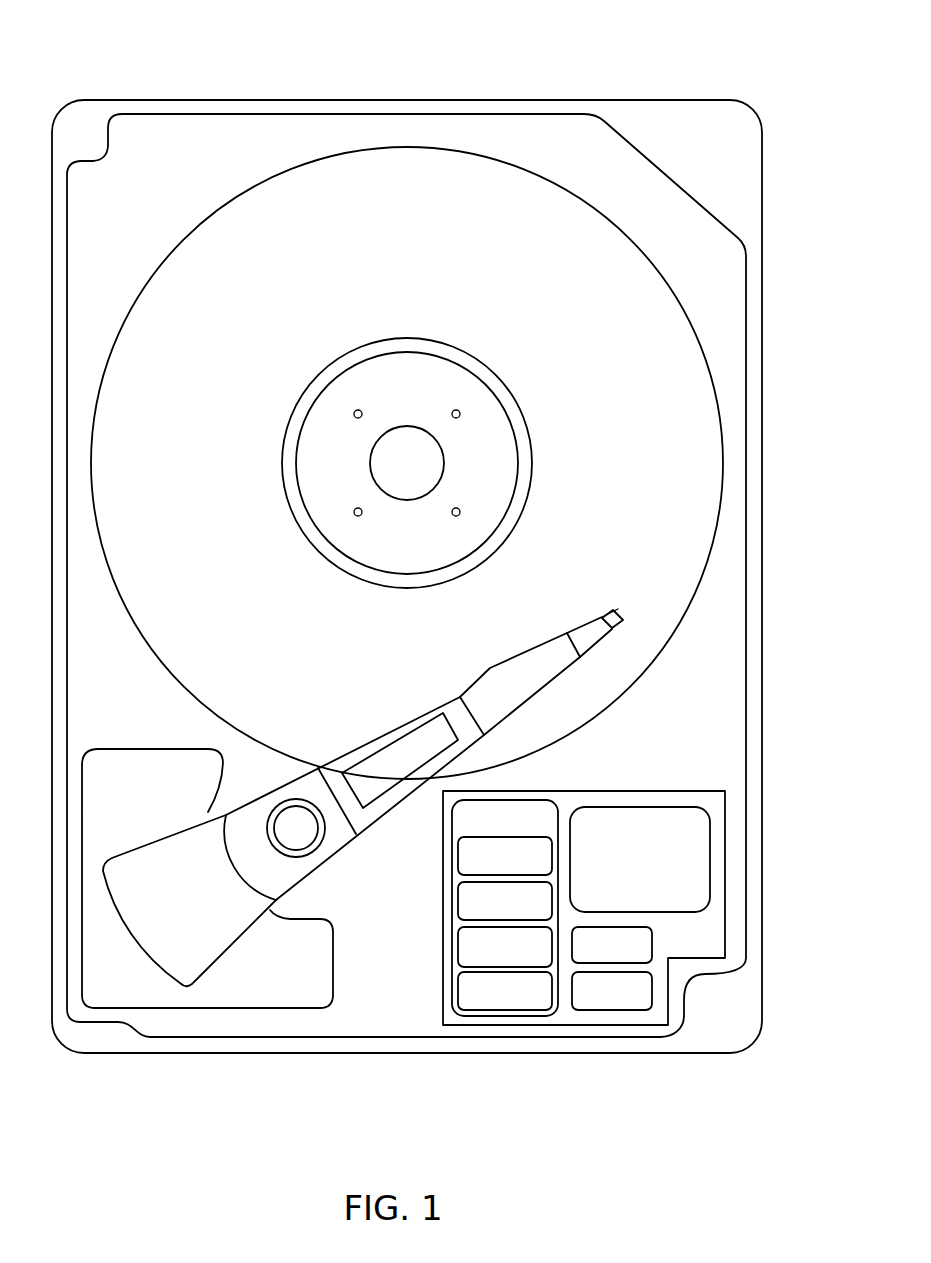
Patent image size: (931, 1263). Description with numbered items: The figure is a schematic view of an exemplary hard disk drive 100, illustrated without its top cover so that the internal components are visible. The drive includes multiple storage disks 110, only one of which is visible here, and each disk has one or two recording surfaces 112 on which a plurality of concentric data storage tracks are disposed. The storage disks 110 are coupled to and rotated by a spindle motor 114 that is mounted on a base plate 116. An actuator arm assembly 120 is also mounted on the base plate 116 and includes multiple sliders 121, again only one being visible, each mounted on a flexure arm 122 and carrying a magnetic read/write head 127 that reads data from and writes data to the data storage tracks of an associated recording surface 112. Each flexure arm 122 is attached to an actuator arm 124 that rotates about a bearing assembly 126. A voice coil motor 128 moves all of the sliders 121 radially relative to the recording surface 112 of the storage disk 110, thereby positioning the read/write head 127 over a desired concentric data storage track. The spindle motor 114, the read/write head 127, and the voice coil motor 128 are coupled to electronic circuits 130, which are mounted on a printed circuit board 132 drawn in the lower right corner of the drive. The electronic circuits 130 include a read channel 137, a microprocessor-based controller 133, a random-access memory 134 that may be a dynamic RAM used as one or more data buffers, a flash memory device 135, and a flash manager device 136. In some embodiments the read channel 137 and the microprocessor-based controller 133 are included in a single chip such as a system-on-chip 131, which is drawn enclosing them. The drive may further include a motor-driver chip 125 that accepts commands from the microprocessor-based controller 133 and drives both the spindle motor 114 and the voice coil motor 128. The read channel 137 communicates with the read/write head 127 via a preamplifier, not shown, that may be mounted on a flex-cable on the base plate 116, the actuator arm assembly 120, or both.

The hard disk drive 100 is at (148, 70).
The storage disk 110 is at (183, 237).
The recording surface 112 is at (172, 444).
The spindle motor 114 is at (502, 402).
The base plate 116 is at (748, 602).
The actuator arm assembly 120 is at (355, 710).
The slider 121 is at (625, 613).
The flexure arm 122 is at (582, 624).
The actuator arm 124 is at (480, 678).
The motor-driver chip 125 is at (591, 959).
The bearing assembly 126 is at (313, 858).
The read/write head 127 is at (611, 598).
The voice coil motor 128 is at (336, 948).
The electronic circuits 130 is at (587, 800).
The system-on-chip 131 is at (484, 834).
The printed circuit board 132 is at (662, 790).
The microprocessor-based controller 133 is at (484, 869).
The random-access memory 134 is at (591, 1004).
The flash memory device 135 is at (619, 874).
The flash manager device 136 is at (484, 915).
The read channel 137 is at (484, 957).